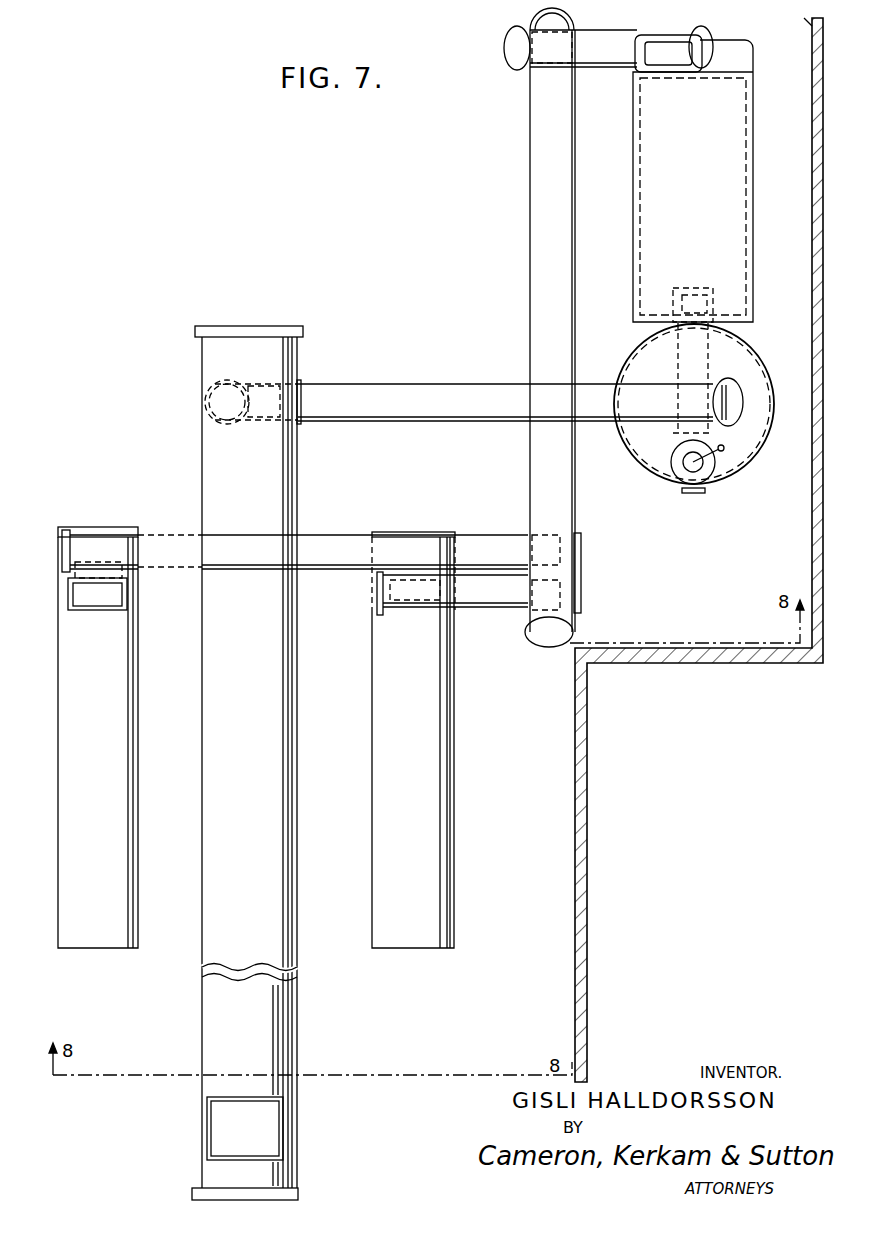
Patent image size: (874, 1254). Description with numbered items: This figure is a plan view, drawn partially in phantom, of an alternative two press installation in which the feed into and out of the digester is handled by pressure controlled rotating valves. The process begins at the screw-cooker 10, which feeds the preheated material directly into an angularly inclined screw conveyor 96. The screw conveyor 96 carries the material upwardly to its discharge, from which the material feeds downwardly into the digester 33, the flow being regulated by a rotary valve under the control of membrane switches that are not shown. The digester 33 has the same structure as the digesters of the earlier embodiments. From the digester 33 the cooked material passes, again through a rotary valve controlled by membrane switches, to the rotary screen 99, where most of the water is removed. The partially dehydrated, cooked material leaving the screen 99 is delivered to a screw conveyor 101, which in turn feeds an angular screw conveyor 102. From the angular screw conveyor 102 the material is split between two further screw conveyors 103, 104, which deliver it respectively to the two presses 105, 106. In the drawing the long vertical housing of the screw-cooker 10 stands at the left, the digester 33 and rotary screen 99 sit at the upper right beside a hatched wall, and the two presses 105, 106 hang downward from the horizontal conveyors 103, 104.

The screw-cooker 10 is at (212, 672).
The digester 33 is at (745, 362).
The screw conveyor 96 is at (468, 386).
The rotary screen 99 is at (738, 176).
The screw conveyor 101 is at (612, 36).
The angular screw conveyor 102 is at (536, 178).
The screw conveyor 103 is at (512, 612).
The screw conveyor 104 is at (485, 538).
The press 105 is at (447, 827).
The press 106 is at (124, 821).